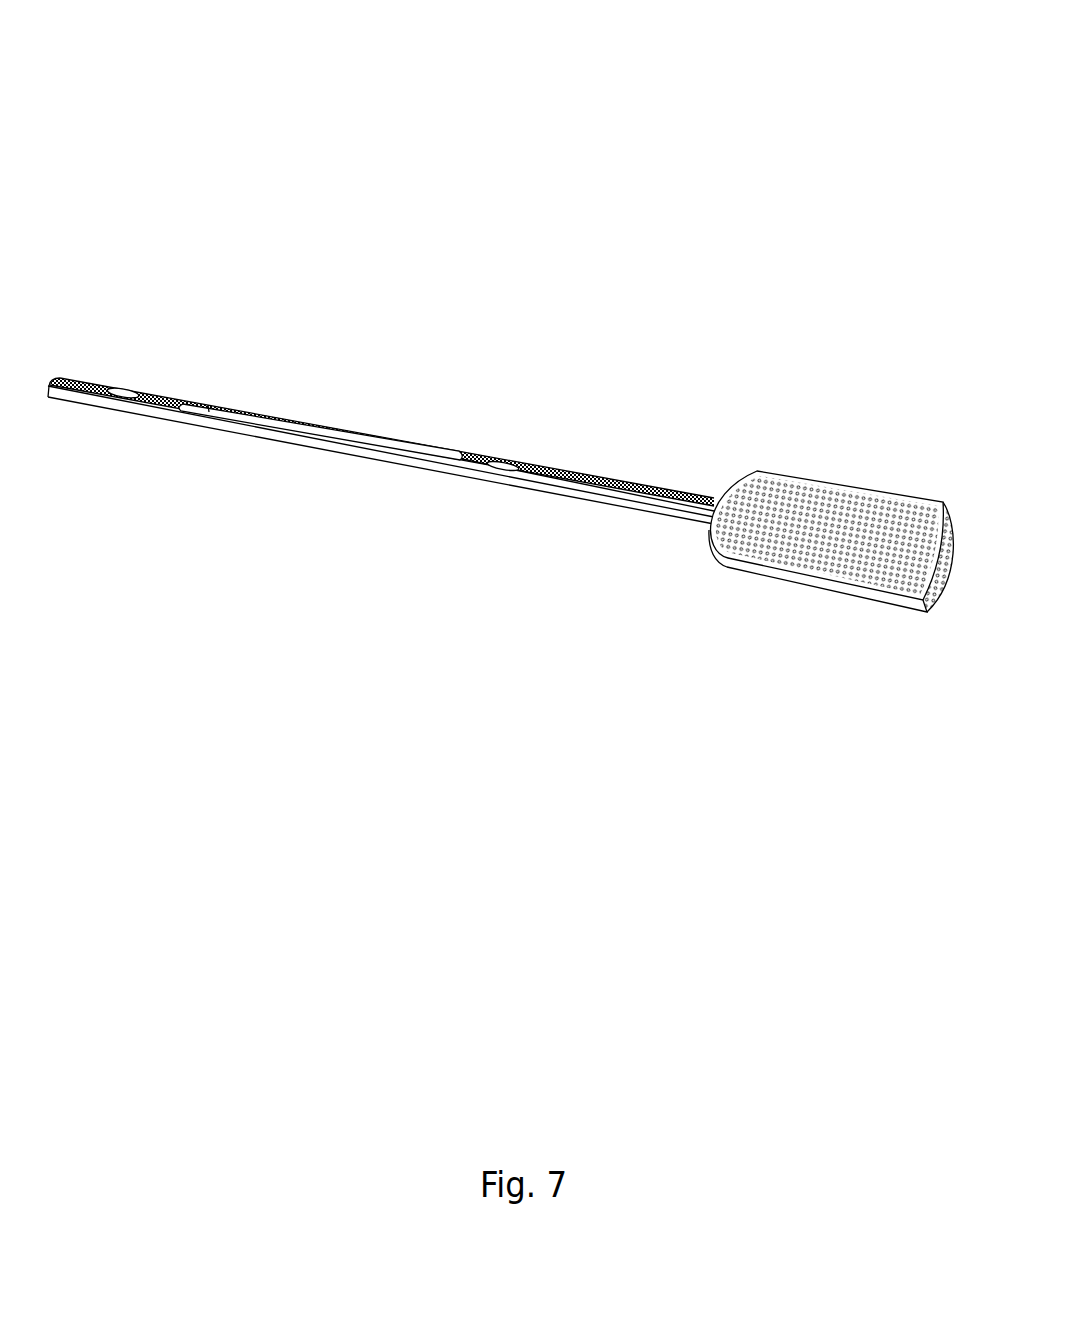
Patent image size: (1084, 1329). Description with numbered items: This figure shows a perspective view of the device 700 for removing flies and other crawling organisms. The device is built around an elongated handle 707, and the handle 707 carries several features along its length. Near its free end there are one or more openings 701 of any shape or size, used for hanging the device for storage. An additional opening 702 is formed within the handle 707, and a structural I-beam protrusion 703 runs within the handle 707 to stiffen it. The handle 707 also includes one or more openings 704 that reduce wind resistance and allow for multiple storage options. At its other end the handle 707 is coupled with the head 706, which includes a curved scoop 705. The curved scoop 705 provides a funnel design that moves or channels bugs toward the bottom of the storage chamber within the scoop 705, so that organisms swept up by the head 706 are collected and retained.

The device 700 is at (500, 334).
The openings 701 is at (138, 376).
The additional opening 702 is at (246, 437).
The structural I-beam protrusion 703 is at (459, 479).
The openings 704 is at (581, 460).
The curved scoop 705 is at (698, 567).
The head 706 is at (830, 467).
The handle 707 is at (362, 417).